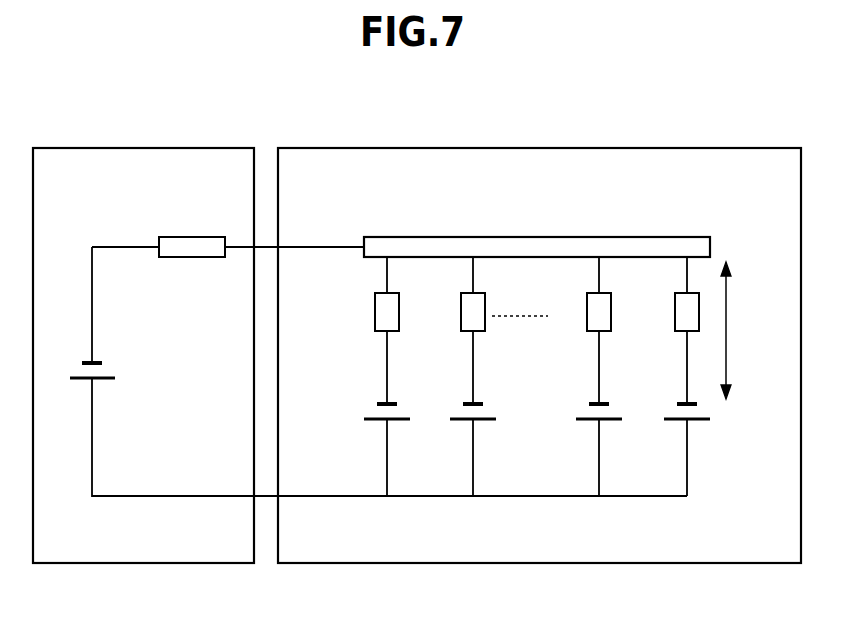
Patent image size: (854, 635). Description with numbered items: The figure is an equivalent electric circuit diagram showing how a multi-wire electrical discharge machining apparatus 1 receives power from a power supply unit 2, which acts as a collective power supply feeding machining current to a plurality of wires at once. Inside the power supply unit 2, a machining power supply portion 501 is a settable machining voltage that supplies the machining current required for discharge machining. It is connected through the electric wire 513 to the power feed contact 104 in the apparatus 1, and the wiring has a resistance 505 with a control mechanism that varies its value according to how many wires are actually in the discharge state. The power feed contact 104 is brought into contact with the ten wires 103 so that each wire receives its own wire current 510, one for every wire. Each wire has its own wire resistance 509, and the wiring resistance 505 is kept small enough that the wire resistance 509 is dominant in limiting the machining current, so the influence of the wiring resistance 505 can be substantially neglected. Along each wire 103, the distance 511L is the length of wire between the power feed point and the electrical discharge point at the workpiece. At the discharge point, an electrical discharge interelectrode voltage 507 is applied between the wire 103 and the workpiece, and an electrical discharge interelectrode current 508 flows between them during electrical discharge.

The multi-wire electrical discharge machining apparatus 1 is at (522, 149).
The power supply unit 2 is at (122, 149).
The power feed contact 104 is at (512, 236).
The electric wire 513 is at (333, 246).
The resistance Rmn 505 is at (190, 258).
The machining power supply portion Vmn 501 is at (117, 372).
The wire resistance Rwn 509 is at (675, 318).
The wire current Iwn 510 is at (687, 385).
The wire 103 is at (599, 375).
The distance L 511L is at (750, 330).
The electrical discharge interelectrode voltage Vgn 507 is at (372, 410).
The electrical discharge interelectrode current Ign 508 is at (327, 473).